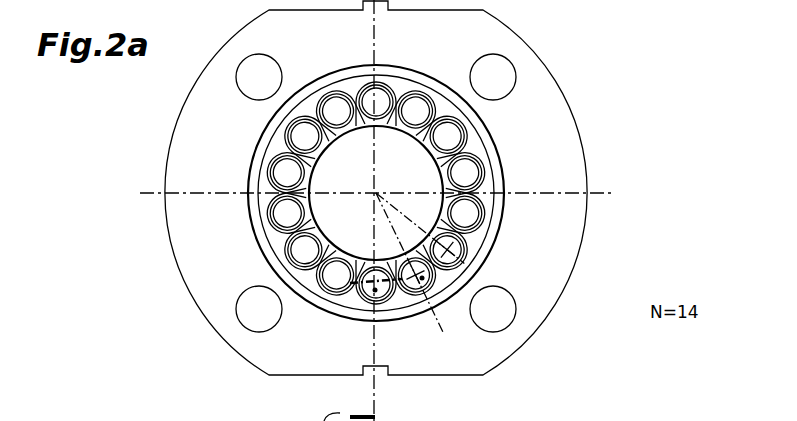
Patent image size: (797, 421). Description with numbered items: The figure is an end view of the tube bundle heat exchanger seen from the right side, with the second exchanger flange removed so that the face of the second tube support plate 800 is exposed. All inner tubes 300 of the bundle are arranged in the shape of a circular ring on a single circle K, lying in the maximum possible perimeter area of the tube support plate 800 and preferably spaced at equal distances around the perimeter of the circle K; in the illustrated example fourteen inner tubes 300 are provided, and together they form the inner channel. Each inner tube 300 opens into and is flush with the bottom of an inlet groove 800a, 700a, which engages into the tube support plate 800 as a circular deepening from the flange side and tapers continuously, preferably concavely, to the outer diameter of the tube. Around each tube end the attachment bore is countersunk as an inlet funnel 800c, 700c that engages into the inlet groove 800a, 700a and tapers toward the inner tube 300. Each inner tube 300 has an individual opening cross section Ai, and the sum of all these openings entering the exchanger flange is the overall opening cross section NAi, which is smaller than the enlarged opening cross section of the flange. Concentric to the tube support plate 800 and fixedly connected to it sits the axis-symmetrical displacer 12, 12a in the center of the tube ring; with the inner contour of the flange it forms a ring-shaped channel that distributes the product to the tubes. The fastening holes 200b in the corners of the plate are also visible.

The fastening holes of flange 200b is at (519, 73).
The second tube support plate 800 is at (499, 139).
The inlet funnel 800c is at (485, 202).
The inlet funnel 700c is at (566, 192).
The inlet groove 800a is at (442, 277).
The inlet groove 700a is at (525, 260).
The overall opening cross section NAi is at (270, 164).
The opening cross section Ai is at (280, 176).
The displacer 12 is at (331, 188).
The central bore of housing 12a is at (332, 212).
The circle K is at (358, 293).
The inner tubes 300 is at (375, 290).